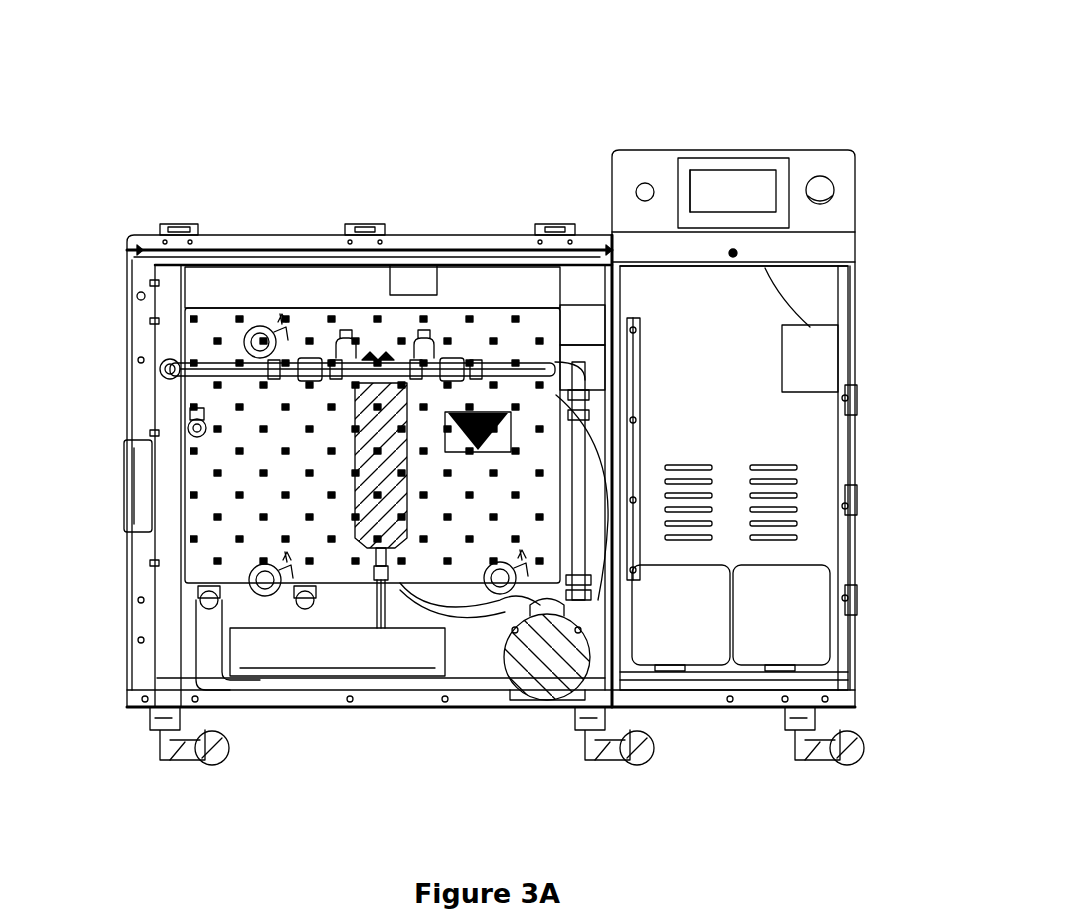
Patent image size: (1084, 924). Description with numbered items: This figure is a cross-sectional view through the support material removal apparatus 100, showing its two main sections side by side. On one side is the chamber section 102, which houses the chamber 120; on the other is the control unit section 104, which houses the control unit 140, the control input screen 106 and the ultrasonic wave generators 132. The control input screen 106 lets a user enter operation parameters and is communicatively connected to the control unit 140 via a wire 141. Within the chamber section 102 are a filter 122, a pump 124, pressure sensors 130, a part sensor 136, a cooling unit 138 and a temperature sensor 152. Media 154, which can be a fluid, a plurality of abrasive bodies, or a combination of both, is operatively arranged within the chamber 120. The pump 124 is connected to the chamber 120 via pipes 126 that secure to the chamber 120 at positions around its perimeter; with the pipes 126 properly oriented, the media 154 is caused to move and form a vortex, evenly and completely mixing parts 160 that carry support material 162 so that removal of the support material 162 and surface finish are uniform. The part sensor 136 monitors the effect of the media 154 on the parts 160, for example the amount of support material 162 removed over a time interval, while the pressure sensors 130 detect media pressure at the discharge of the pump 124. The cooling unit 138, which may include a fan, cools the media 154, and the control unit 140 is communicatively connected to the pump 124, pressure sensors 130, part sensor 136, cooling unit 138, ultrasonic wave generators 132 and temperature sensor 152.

The support material removal apparatus 100 is at (737, 108).
The chamber section 102 is at (374, 228).
The control unit section 104 is at (806, 135).
The control input screen 106 is at (797, 214).
The chamber 120 is at (176, 546).
The filter 122 is at (347, 450).
The pump 124 is at (548, 702).
The pipes 126 is at (600, 532).
The pressure sensors 130 is at (309, 356).
The ultrasonic wave generators 132 is at (830, 622).
The part sensor 136 is at (432, 258).
The cooling unit 138 is at (131, 543).
The control unit 140 is at (822, 400).
The wire 141 is at (803, 296).
The temperature sensor 152 is at (226, 602).
The media 154 is at (236, 400).
The parts 160 is at (486, 406).
The support material 162 is at (456, 468).